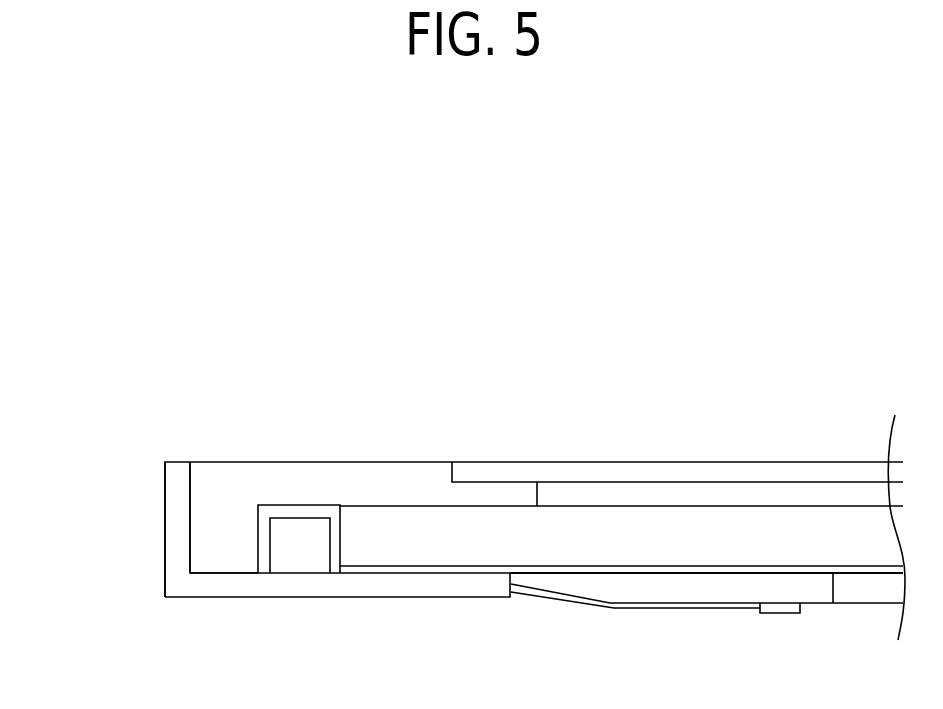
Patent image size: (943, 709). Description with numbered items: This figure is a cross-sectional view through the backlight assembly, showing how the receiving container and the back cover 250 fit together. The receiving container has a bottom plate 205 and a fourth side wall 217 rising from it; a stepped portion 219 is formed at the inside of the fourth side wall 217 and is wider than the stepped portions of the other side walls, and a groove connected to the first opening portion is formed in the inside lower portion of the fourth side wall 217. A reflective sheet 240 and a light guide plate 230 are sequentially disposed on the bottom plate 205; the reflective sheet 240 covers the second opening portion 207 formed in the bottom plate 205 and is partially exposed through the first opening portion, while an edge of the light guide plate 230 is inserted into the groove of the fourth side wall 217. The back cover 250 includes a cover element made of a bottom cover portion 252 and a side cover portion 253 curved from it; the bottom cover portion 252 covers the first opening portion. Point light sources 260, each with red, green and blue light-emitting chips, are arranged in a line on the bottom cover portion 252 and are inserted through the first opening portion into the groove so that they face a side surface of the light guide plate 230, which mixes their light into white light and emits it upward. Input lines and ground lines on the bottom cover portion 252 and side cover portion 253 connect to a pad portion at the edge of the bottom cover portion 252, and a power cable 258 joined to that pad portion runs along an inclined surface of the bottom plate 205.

The back cover 250 is at (150, 483).
The side cover portion 253 is at (173, 510).
The fourth side wall 217 is at (212, 550).
The point light sources 260 is at (299, 562).
The light guide plate 230 is at (607, 528).
The stepped portion 219 is at (485, 482).
The reflective sheet 240 is at (708, 565).
The bottom cover portion 252 is at (417, 587).
The power cable 258 is at (680, 608).
The bottom plate 205 is at (808, 592).
The second opening portion 207 is at (863, 592).